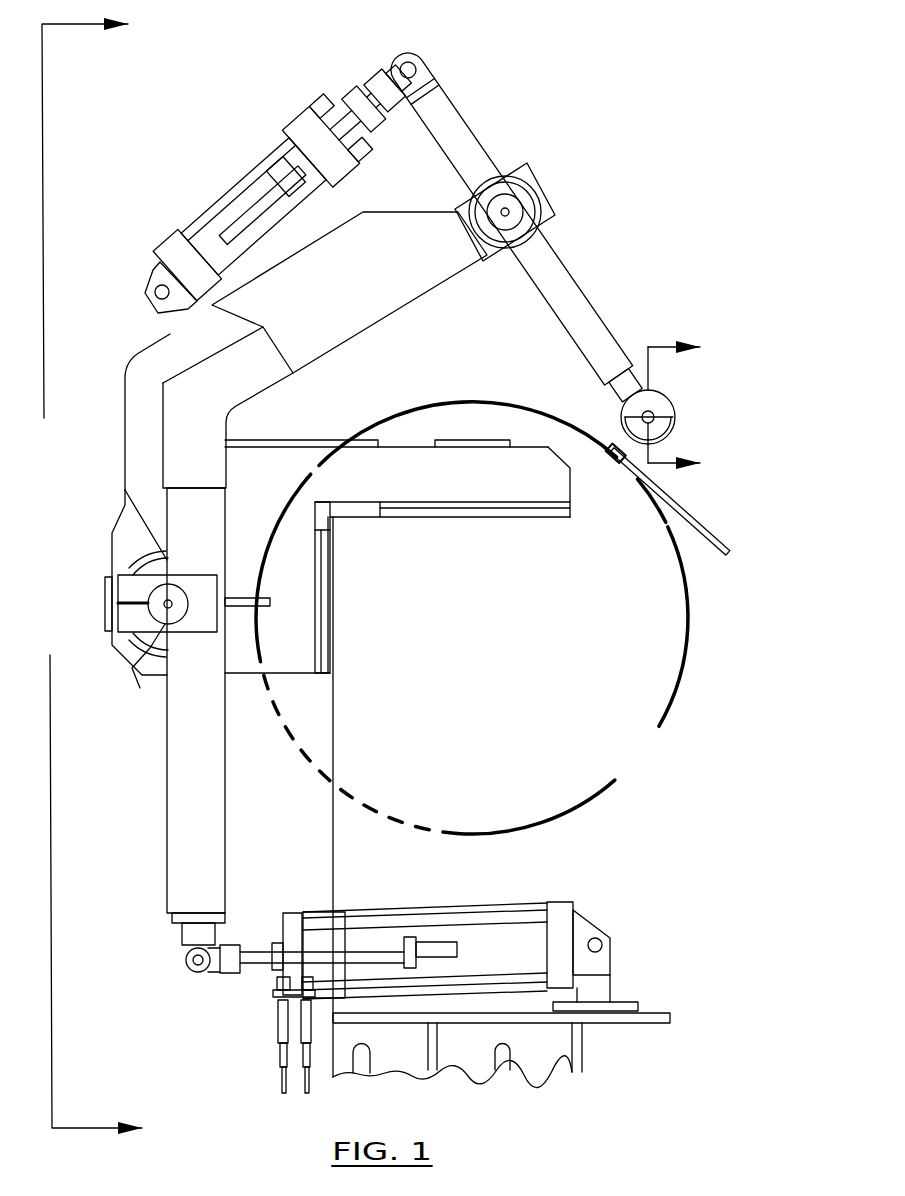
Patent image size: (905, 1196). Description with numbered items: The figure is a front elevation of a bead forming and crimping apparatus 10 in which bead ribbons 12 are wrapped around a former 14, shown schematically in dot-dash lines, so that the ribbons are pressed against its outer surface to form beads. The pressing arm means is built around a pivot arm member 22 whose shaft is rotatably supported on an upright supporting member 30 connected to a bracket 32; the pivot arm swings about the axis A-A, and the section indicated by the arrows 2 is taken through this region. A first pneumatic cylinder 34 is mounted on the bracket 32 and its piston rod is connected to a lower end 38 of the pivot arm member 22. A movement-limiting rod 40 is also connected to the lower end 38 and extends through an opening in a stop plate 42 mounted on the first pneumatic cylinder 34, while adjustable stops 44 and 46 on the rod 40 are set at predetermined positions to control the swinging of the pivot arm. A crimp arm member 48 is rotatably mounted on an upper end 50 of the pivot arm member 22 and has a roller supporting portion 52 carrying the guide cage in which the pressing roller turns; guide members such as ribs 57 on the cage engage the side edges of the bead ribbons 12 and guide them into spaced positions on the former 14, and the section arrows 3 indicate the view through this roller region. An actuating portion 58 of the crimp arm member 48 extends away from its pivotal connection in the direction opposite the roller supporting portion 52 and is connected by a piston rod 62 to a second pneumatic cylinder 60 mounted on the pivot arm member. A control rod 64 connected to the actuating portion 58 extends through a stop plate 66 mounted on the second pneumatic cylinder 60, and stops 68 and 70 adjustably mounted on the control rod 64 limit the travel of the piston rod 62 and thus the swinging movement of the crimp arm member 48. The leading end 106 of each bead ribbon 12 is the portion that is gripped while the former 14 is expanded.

The section line 2- 2 is at (101, 576).
The section line 3- 3 is at (683, 405).
The bead forming and crimping apparatus 10 is at (567, 125).
The bead ribbons 12 is at (670, 528).
The former 14 is at (472, 627).
The pivot arm member 22 is at (199, 553).
The upright supporting member 30 is at (397, 758).
The bracket 32 is at (501, 1050).
The first pneumatic cylinder 34 is at (460, 937).
The lower end of the pivot arm member 38 is at (171, 705).
The movement-limiting rod 40 is at (265, 925).
The stop plate 42 is at (268, 1035).
The adjustable stop 44 is at (231, 970).
The adjustable stop 46 is at (351, 913).
The crimp arm member 48 is at (562, 293).
The upper end of the pivot arm member 50 is at (383, 268).
The roller supporting portion 52 is at (621, 340).
The ribs 57 is at (677, 419).
The actuating portion 58 is at (451, 133).
The second pneumatic cylinder 60 is at (237, 223).
The piston rod 62 is at (399, 44).
The control rod 64 is at (382, 71).
The stop plate 66 is at (326, 125).
The stop 68 is at (268, 163).
The stop 70 is at (351, 91).
The leading end 106 is at (591, 424).